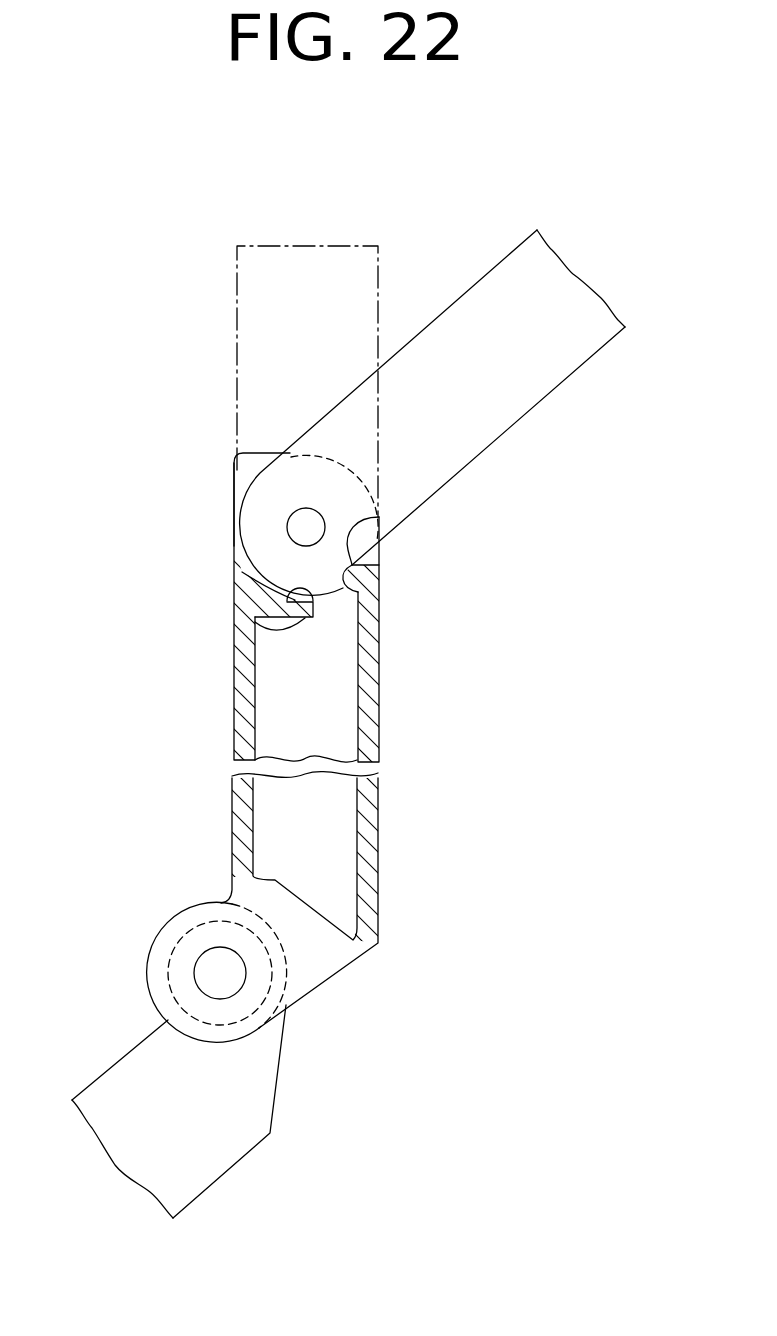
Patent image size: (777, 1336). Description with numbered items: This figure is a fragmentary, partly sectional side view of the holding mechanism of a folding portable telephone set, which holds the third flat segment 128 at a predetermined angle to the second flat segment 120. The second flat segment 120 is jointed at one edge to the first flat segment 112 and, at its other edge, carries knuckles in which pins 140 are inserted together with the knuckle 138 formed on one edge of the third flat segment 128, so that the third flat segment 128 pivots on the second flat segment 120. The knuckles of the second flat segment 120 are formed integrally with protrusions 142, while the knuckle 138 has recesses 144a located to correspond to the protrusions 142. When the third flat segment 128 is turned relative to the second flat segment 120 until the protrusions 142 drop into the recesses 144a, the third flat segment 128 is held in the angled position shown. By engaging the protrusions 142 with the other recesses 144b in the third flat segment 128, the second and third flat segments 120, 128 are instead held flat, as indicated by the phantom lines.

The first flat segment 112 is at (122, 1077).
The second flat segment 120 is at (236, 705).
The third flat segment 128 is at (302, 266).
The knuckle 138 is at (238, 538).
The pins 140 is at (304, 521).
The protrusions 142 is at (380, 518).
The recesses 144a is at (380, 592).
The other recesses 144b is at (300, 620).